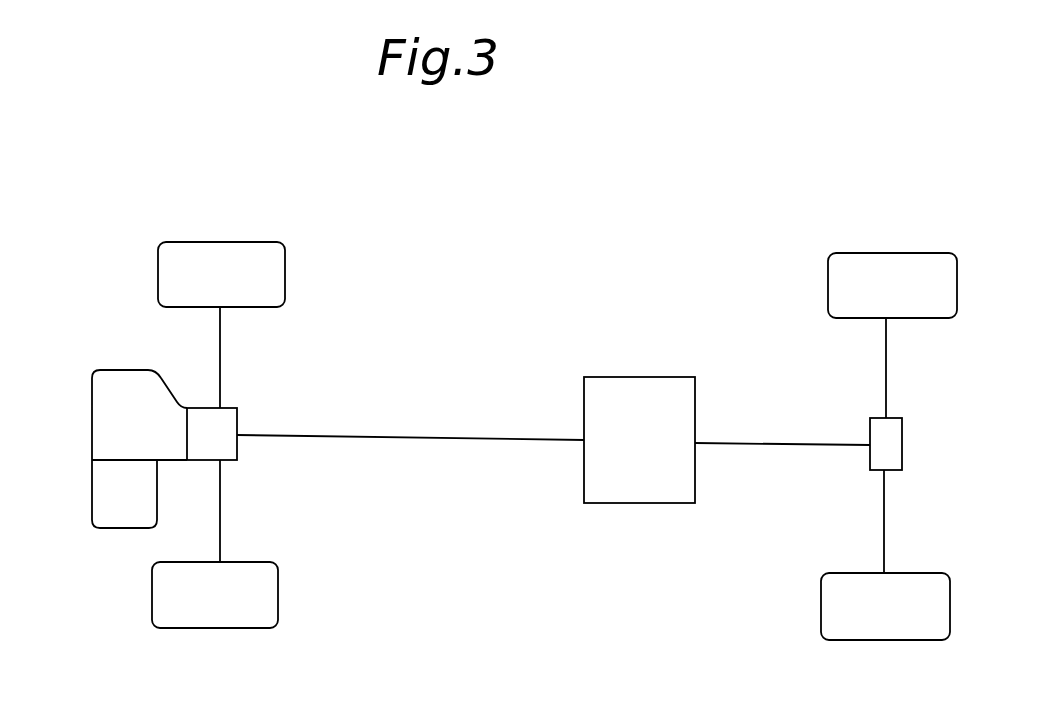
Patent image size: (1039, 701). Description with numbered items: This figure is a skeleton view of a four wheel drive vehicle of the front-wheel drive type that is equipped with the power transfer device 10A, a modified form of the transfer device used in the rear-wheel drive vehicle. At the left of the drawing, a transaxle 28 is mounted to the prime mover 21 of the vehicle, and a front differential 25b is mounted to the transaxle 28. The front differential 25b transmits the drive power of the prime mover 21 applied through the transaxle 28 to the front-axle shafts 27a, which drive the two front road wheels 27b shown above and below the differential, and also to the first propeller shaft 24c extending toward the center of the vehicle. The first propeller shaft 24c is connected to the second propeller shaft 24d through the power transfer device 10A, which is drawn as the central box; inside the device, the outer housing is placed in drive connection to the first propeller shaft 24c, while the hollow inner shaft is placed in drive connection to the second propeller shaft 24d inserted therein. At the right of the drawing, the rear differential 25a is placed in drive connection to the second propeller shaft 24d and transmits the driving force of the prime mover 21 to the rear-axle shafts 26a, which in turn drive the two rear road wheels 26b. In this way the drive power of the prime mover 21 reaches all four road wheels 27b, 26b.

The power transfer device 10A is at (606, 507).
The prime mover 21 is at (100, 507).
The first propeller shaft 24c is at (427, 437).
The second propeller shaft 24d is at (767, 447).
The rear differential 25a is at (893, 452).
The front differential 25b is at (228, 442).
The rear-axle shaft 26a is at (887, 370).
The rear road wheel 26b is at (928, 262).
The front-axle shaft 27a is at (220, 352).
The front road wheel 27b is at (267, 250).
The transaxle 28 is at (100, 392).